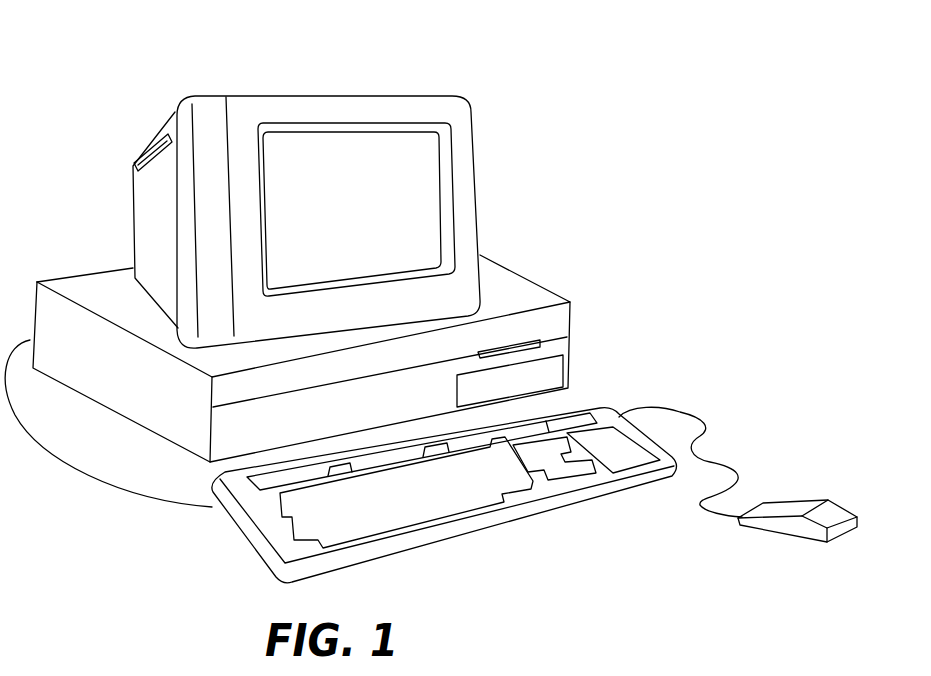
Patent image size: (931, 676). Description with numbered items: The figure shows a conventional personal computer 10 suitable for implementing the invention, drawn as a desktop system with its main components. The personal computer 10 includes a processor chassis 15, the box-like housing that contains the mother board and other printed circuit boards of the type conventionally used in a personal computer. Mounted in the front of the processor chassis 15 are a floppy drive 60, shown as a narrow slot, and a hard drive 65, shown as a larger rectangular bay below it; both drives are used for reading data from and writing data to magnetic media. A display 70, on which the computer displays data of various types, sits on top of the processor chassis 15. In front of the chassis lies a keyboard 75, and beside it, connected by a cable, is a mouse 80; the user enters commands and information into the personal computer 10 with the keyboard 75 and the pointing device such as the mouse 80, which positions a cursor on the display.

The personal computer 10 is at (460, 557).
The processor chassis 15 is at (355, 357).
The floppy drive 60 is at (513, 340).
The hard drive 65 is at (533, 373).
The display 70 is at (470, 167).
The keyboard 75 is at (553, 512).
The mouse 80 is at (830, 542).